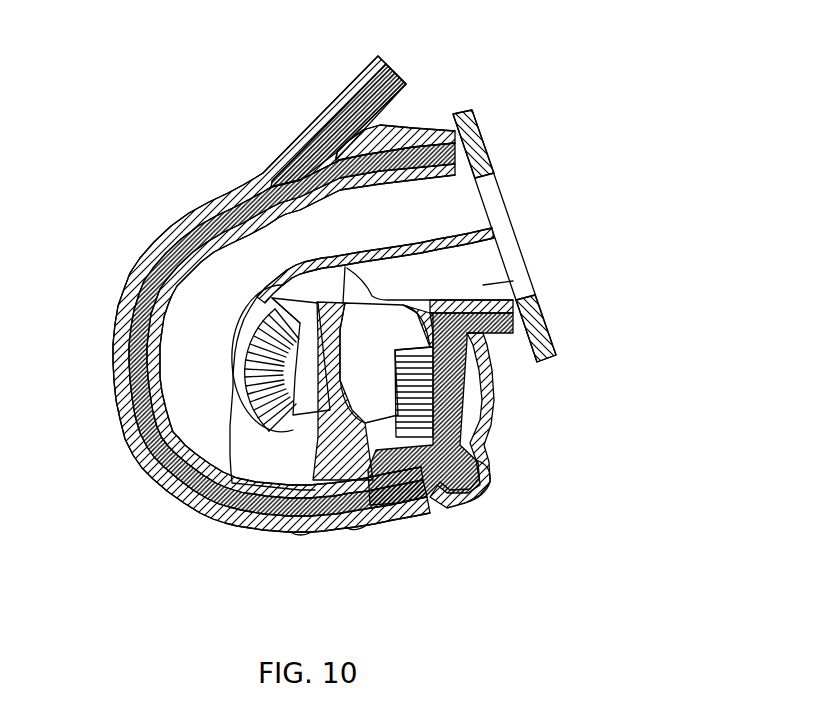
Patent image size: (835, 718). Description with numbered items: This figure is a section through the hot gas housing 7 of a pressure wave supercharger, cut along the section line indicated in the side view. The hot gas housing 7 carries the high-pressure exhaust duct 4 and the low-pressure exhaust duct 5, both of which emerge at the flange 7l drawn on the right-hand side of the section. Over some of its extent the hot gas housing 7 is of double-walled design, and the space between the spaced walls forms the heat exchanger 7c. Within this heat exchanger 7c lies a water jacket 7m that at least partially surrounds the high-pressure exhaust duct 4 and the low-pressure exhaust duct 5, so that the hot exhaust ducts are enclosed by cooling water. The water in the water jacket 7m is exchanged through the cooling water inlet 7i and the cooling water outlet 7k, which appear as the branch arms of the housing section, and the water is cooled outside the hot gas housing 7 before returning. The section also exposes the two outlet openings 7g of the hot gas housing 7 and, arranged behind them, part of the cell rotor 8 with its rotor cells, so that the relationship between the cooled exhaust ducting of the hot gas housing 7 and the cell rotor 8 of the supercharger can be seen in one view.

The high-pressure exhaust duct 4 is at (233, 262).
The low-pressure exhaust duct 5 is at (513, 284).
The hot gas housing 7 is at (500, 66).
The heat exchanger 7c is at (285, 143).
The outlet openings 7g is at (300, 528).
The cooling water inlet 7i is at (390, 69).
The cooling water outlet 7k is at (479, 482).
The flange 7l is at (480, 151).
The water jacket 7m is at (403, 143).
The cell rotor 8 is at (477, 423).